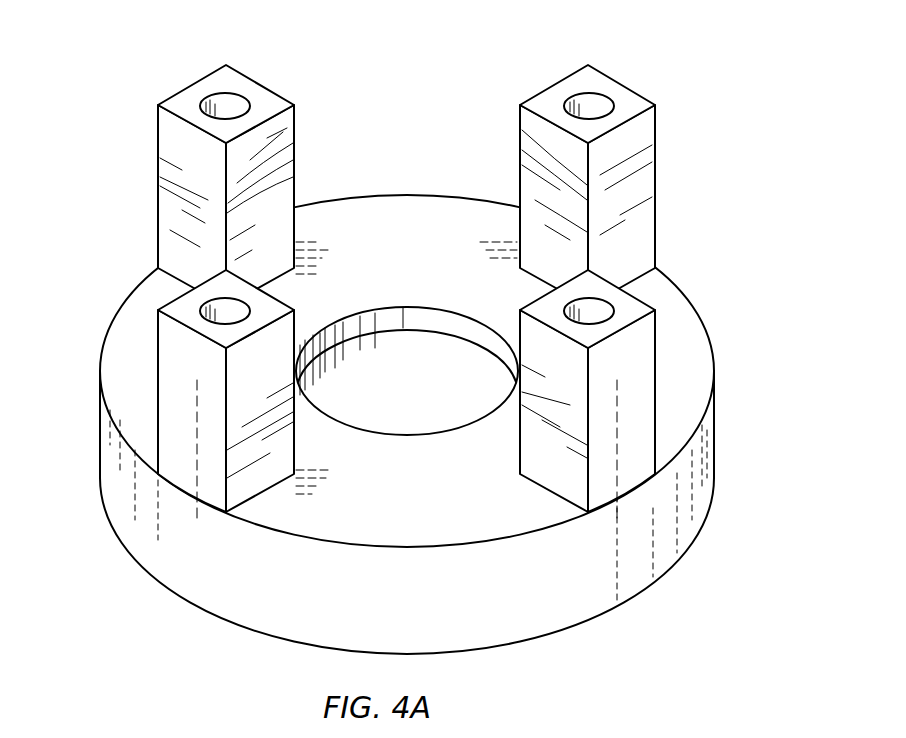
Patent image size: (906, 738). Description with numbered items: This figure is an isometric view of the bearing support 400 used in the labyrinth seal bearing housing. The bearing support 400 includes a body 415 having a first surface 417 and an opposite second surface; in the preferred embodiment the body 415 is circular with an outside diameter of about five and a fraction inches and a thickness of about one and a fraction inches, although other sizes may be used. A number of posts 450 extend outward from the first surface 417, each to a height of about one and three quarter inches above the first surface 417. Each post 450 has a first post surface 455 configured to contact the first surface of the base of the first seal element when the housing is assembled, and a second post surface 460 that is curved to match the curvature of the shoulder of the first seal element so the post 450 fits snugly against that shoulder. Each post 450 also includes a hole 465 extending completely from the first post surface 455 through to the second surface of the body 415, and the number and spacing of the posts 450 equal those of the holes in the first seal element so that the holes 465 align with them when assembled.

The bearing support 400 is at (156, 43).
The body 415 is at (663, 557).
The first surface 417 is at (681, 314).
The post 450 is at (156, 176).
The first post surface 455 is at (233, 88).
The second post surface 460 is at (285, 192).
The hole 465 is at (222, 106).